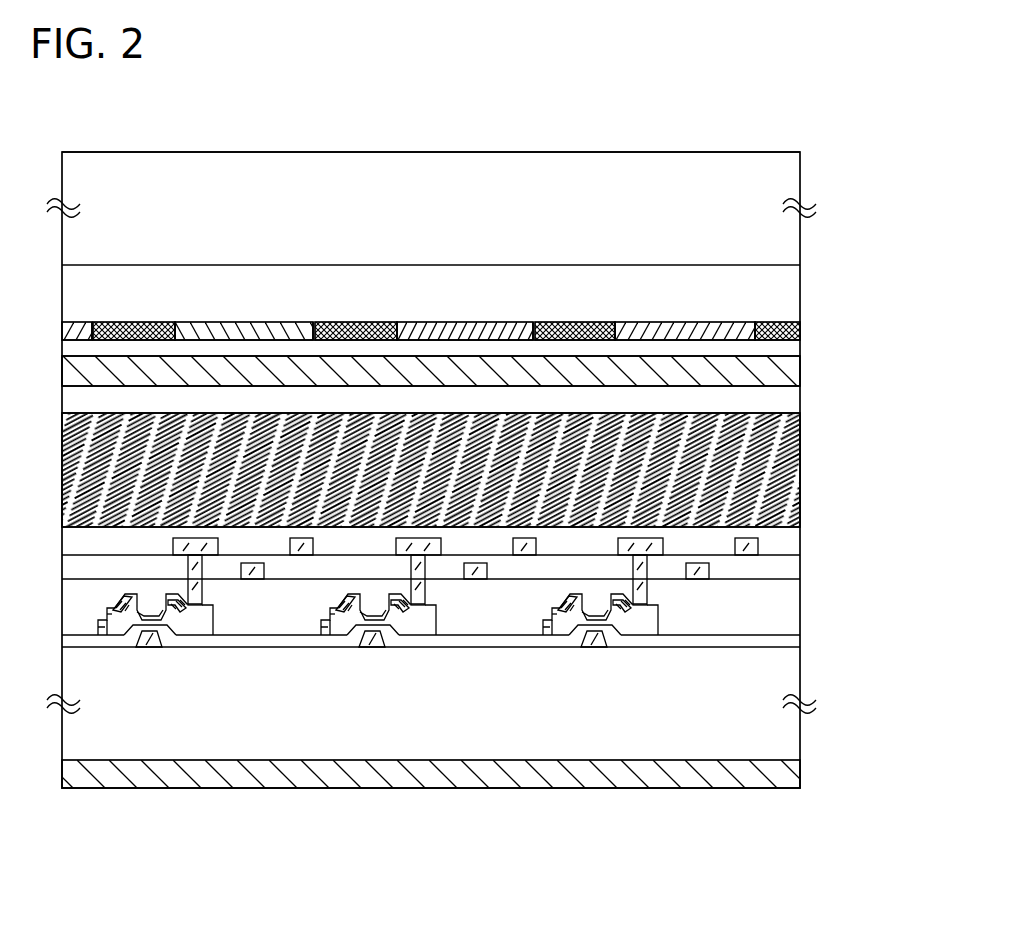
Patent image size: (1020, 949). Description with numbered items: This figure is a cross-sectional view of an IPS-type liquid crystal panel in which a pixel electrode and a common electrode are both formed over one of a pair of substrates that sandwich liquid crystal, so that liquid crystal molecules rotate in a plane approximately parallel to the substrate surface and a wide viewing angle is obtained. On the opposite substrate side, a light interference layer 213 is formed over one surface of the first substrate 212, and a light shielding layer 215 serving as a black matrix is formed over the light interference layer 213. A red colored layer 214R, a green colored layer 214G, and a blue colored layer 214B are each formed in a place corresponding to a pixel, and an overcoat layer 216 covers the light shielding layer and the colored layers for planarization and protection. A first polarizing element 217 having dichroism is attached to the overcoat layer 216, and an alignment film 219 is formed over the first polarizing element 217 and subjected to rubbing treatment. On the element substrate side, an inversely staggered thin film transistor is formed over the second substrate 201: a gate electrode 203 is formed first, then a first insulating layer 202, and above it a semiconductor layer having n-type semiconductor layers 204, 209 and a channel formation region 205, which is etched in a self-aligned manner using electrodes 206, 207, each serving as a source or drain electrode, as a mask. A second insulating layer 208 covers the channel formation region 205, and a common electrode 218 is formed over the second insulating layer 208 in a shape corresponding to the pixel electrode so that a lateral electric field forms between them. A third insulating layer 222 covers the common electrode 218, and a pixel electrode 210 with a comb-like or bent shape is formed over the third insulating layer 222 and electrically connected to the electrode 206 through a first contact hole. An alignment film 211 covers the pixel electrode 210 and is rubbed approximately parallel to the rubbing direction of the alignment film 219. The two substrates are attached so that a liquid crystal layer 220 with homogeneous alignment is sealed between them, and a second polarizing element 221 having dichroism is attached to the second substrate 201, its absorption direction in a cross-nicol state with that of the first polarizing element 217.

The second substrate 201 is at (782, 683).
The first insulating layer 202 is at (782, 640).
The gate electrode 203 is at (115, 614).
The n-type semiconductor layer 204 is at (112, 606).
The channel formation region 205 is at (153, 632).
The electrode 206 is at (205, 578).
The electrode 207 is at (98, 628).
The second insulating layer 208 is at (782, 608).
The n-type semiconductor layer 209 is at (168, 620).
The pixel electrode 210 is at (262, 578).
The alignment film 211 is at (782, 542).
The first substrate 212 is at (782, 183).
The light interference layer 213 is at (782, 299).
The red colored layer 214R is at (242, 322).
The green colored layer 214G is at (463, 322).
The blue colored layer 214B is at (713, 322).
The light shielding layer 215 is at (352, 322).
The overcoat layer 216 is at (780, 350).
The first polarizing element 217 is at (782, 373).
The common electrode 218 is at (296, 555).
The alignment film 219 is at (787, 405).
The liquid crystal layer 220 is at (790, 478).
The second polarizing element 221 is at (782, 778).
The third insulating layer 222 is at (783, 570).